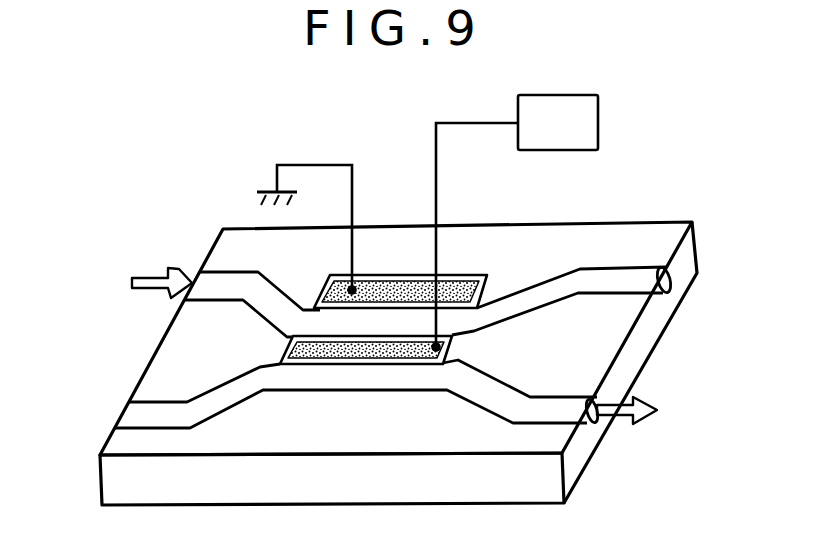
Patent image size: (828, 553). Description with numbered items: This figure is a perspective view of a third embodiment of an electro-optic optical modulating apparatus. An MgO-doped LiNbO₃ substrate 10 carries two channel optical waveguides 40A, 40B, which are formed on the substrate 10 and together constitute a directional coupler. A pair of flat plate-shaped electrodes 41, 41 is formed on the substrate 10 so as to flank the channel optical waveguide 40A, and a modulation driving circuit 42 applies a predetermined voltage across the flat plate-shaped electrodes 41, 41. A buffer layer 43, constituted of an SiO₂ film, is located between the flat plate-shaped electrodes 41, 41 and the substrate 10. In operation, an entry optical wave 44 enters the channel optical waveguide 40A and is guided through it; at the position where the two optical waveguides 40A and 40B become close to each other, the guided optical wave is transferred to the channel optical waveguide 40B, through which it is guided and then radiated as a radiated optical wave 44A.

The substrate 10 is at (128, 442).
The channel optical waveguide 40A is at (586, 279).
The channel optical waveguide 40B is at (497, 402).
The flat plate-shaped electrodes 41 is at (468, 274).
The modulation driving circuit 42 is at (580, 137).
The buffer layer 43 is at (317, 297).
The entry optical wave 44 is at (158, 272).
The radiated optical wave 44A is at (623, 400).